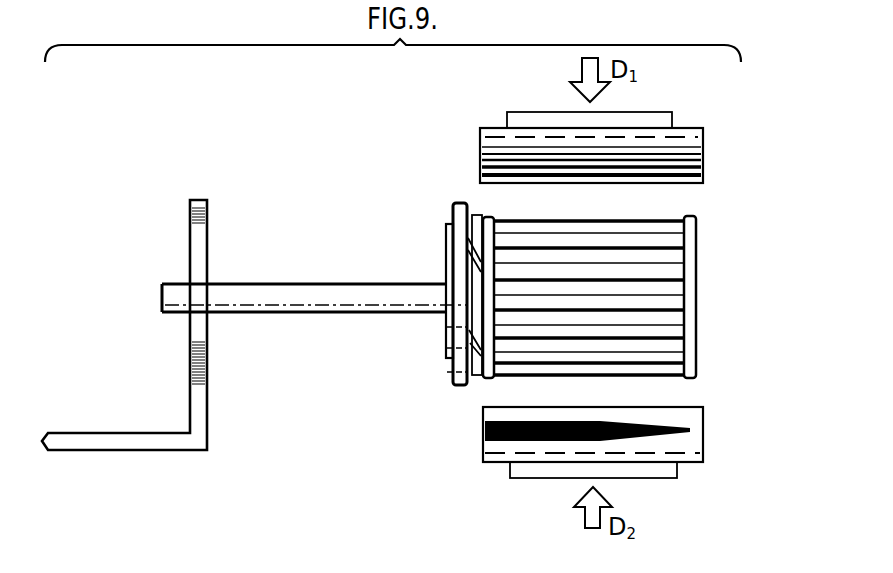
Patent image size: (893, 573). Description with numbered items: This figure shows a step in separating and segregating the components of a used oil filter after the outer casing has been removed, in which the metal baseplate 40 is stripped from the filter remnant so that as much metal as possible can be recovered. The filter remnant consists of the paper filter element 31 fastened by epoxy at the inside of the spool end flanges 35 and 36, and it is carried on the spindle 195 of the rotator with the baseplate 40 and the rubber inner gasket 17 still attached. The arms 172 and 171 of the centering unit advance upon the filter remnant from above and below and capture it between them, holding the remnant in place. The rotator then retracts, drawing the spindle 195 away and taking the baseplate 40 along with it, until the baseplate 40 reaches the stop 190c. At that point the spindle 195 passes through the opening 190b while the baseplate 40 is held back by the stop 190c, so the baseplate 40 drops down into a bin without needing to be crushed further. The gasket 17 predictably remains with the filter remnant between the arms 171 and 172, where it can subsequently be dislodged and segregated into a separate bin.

The stop 190c is at (200, 240).
The opening 190b is at (230, 287).
The spindle 195 is at (335, 305).
The baseplate 40 is at (460, 328).
The flange 35 is at (488, 222).
The inner gasket 17 is at (480, 345).
The filter element 31 is at (672, 257).
The flange 36 is at (693, 323).
The arm 172 is at (687, 157).
The arm 171 is at (688, 428).